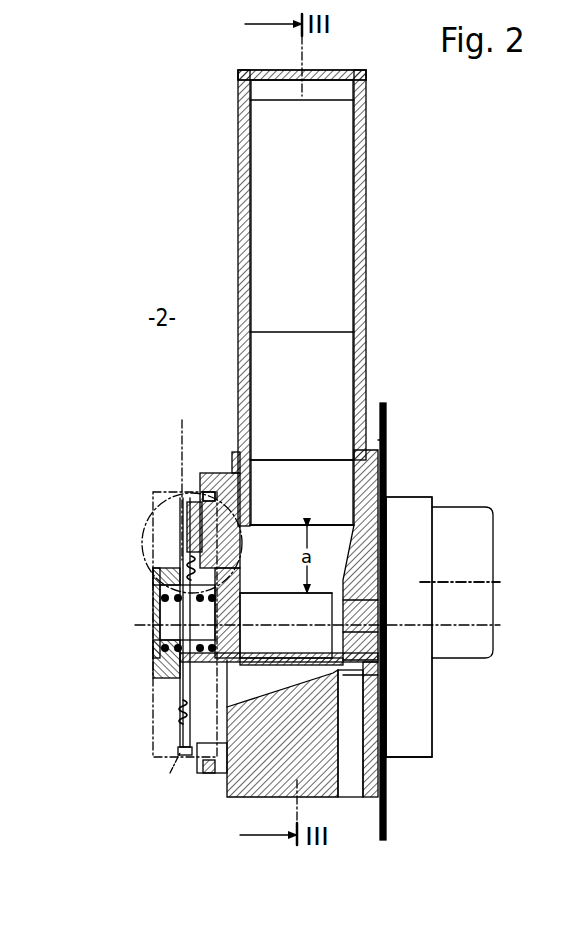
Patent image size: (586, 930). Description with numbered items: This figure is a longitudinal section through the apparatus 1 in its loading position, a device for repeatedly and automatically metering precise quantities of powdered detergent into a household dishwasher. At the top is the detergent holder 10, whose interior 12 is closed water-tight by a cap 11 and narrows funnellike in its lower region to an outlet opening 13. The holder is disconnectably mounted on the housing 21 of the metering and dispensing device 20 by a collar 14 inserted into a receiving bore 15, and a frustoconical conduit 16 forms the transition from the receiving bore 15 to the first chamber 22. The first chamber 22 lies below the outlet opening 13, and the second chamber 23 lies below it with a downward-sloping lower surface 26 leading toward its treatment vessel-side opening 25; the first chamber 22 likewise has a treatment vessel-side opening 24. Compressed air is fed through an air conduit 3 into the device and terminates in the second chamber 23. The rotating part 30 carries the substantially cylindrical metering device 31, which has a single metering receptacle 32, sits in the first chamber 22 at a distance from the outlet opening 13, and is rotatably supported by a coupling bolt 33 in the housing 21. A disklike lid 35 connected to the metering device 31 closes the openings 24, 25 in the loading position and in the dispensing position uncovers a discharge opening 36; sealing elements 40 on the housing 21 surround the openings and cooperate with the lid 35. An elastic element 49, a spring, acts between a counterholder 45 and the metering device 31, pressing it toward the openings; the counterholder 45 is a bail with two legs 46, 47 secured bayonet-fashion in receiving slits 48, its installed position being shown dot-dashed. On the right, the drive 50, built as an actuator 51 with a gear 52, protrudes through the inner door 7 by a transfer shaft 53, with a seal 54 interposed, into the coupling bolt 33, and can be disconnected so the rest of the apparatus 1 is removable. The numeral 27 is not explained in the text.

The apparatus 1 is at (490, 247).
The air conduit 3 is at (325, 665).
The inner door 7 is at (386, 405).
The detergent holder 10 is at (368, 185).
The cap 11 is at (368, 78).
The interior 12 is at (330, 245).
The outlet opening 13 is at (386, 487).
The collar 14 is at (250, 510).
The receiving bore 15 is at (250, 510).
The frustoconical conduit 16 is at (386, 552).
The metering and dispensing device 20 is at (202, 470).
The housing 21 is at (386, 442).
The first chamber 22 is at (380, 598).
The second chamber 23 is at (175, 680).
The treatment vessel-side opening 24 is at (240, 586).
The treatment vessel-side opening 25 is at (185, 715).
The downward-sloping lower surface 26 is at (180, 703).
The rod bore 27 is at (183, 728).
The rotating part 30 is at (250, 672).
The metering device 31 is at (225, 775).
The metering receptacle 32 is at (160, 630).
The coupling bolt 33 is at (386, 600).
The lid 35 is at (176, 512).
The discharge opening 36 is at (183, 549).
The sealing element 40 is at (205, 562).
The counterholder 45 is at (153, 660).
The leg 46 is at (178, 495).
The leg 47 is at (180, 776).
The receiving slit 48 is at (215, 490).
The elastic element 49 is at (158, 598).
The drive 50 is at (485, 483).
The actuator 51 is at (467, 640).
The gear 52 is at (413, 740).
The transfer shaft 53 is at (386, 632).
The seal 54 is at (386, 675).